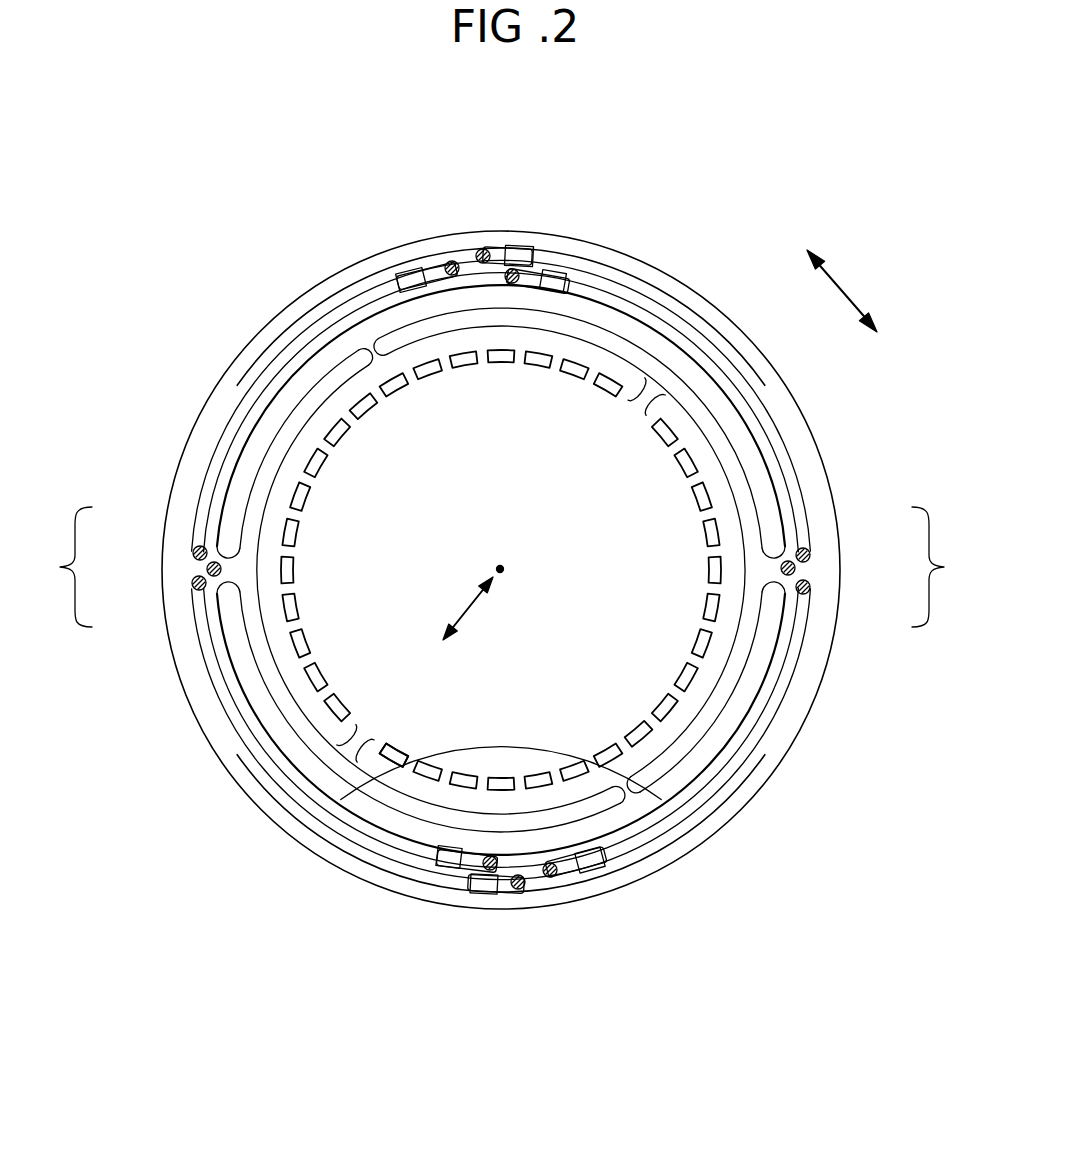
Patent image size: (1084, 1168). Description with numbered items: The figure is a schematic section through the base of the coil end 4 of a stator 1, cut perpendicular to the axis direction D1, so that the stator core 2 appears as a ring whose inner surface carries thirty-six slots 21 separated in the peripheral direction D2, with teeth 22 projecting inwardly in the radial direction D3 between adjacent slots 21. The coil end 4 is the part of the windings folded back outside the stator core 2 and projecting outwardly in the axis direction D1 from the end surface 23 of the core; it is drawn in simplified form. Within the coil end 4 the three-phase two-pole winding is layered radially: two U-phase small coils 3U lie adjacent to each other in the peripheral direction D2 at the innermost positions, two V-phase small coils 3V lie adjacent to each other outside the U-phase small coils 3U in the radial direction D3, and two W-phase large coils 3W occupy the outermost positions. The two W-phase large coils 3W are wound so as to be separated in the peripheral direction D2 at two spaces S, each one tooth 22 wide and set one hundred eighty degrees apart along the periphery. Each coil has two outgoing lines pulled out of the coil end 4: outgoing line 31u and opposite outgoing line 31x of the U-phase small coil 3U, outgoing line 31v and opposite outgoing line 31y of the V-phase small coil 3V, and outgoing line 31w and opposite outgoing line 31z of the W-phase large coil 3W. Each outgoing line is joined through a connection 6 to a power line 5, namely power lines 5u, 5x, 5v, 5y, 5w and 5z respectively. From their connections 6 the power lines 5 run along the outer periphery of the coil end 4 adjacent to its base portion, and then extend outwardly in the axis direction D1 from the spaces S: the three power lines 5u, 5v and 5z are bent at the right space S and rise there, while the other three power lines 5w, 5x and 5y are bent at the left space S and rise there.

The stator 1 is at (724, 143).
The stator core 2 is at (673, 277).
The end surface 23 is at (740, 788).
The coil end 4 is at (250, 733).
The U-phase small coil 3U is at (477, 335).
The V-phase small coil 3V is at (605, 340).
The W-phase large coil 3W is at (467, 297).
The outgoing line 31u is at (533, 272).
The outgoing line 31v is at (553, 873).
The outgoing line 31w is at (520, 890).
The outgoing line 31x is at (473, 872).
The outgoing line 31y is at (447, 262).
The outgoing line 31z is at (483, 249).
The power line 5 is at (501, 567).
The power line 5u is at (795, 568).
The power line 5v is at (810, 586).
The power line 5w is at (193, 584).
The power line 5x is at (207, 569).
The power line 5y is at (193, 553).
The power line 5z is at (810, 555).
The connection 6 is at (402, 275).
The slot 21 is at (305, 479).
The tooth 22 is at (302, 645).
The space S is at (278, 573).
The axis direction D1 is at (503, 569).
The peripheral direction D2 is at (845, 289).
The radial direction D3 is at (476, 606).